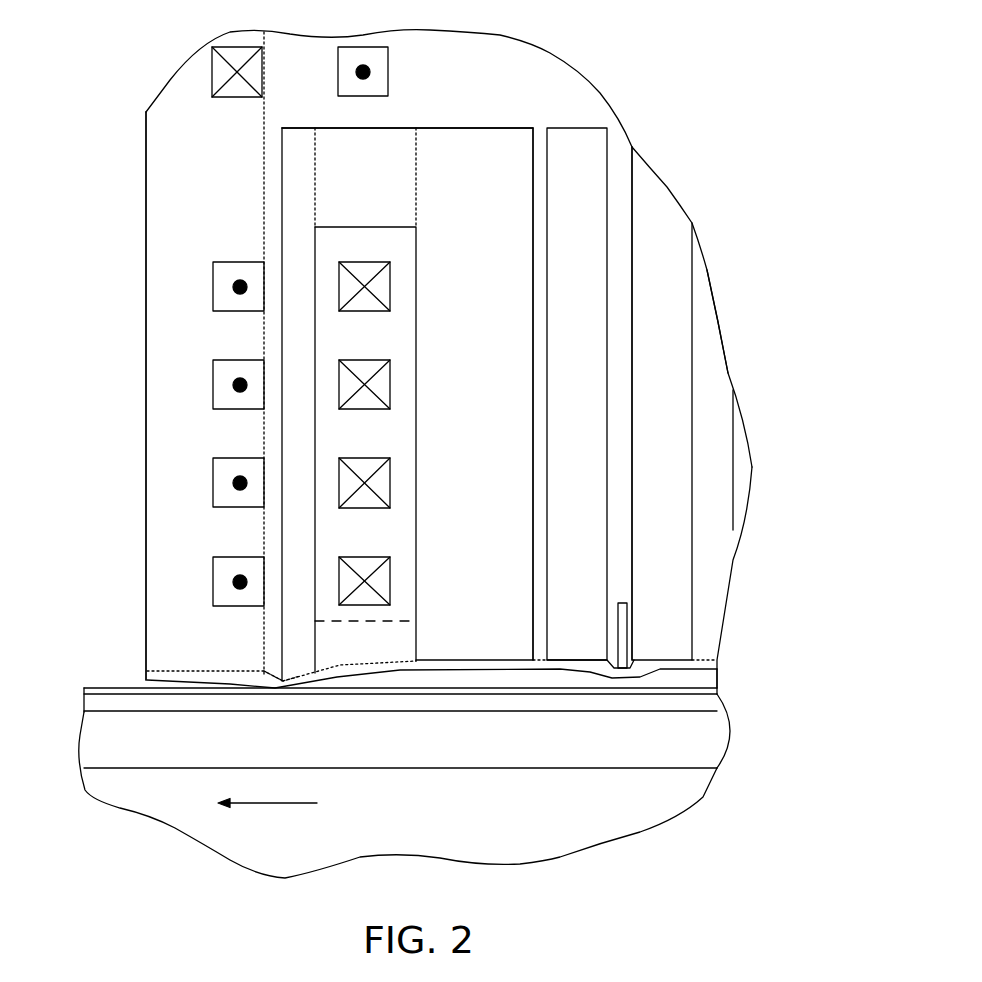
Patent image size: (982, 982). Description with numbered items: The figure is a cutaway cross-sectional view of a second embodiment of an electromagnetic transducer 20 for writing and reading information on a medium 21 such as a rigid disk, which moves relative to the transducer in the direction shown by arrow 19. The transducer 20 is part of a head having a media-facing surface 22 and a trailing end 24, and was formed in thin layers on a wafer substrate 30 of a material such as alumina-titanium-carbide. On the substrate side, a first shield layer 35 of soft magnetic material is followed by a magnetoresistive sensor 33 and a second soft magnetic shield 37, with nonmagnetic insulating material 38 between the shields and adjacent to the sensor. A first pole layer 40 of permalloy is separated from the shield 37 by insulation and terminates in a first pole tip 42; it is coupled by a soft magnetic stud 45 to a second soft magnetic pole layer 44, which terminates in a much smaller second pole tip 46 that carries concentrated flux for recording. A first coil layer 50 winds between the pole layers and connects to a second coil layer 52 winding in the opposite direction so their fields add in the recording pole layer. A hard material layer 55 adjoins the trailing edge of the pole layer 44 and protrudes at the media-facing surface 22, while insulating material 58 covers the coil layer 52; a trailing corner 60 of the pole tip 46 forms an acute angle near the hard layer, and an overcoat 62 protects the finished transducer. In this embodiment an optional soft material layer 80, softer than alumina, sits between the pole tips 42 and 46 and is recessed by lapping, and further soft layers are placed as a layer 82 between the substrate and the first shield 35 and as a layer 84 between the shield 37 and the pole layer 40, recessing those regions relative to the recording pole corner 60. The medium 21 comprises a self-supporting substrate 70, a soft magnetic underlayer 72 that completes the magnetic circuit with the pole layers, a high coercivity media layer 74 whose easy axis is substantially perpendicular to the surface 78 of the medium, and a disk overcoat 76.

The arrow 19 is at (267, 805).
The electromagnetic transducer 20 is at (120, 91).
The medium 21 is at (767, 748).
The media-facing surface 22 is at (702, 682).
The trailing end 24 is at (135, 508).
The wafer substrate 30 is at (743, 470).
The magnetoresistive sensor 33 is at (627, 603).
The first shield layer 35 is at (647, 418).
The second soft magnetic shield 37 is at (562, 418).
The insulating material 38 is at (622, 175).
The first pole layer 40 is at (457, 422).
The first pole tip 42 is at (471, 674).
The second soft magnetic pole layer 44 is at (283, 425).
The soft magnetic stud 45 is at (355, 193).
The second pole tip 46 is at (315, 691).
The first coil layer 50 is at (391, 578).
The second coil layer 52 is at (213, 286).
The hard material layer 55 is at (264, 638).
The insulating material 58 is at (191, 455).
The trailing corner 60 is at (290, 666).
The overcoat 62 is at (567, 660).
The self-supporting substrate 70 is at (470, 845).
The soft magnetic underlayer 72 is at (197, 757).
The media layer 74 is at (636, 702).
The disk overcoat 76 is at (118, 700).
The surface 78 is at (100, 676).
The soft material layer 80 is at (355, 655).
The soft material layer 82 is at (724, 360).
The soft material layer 84 is at (533, 603).